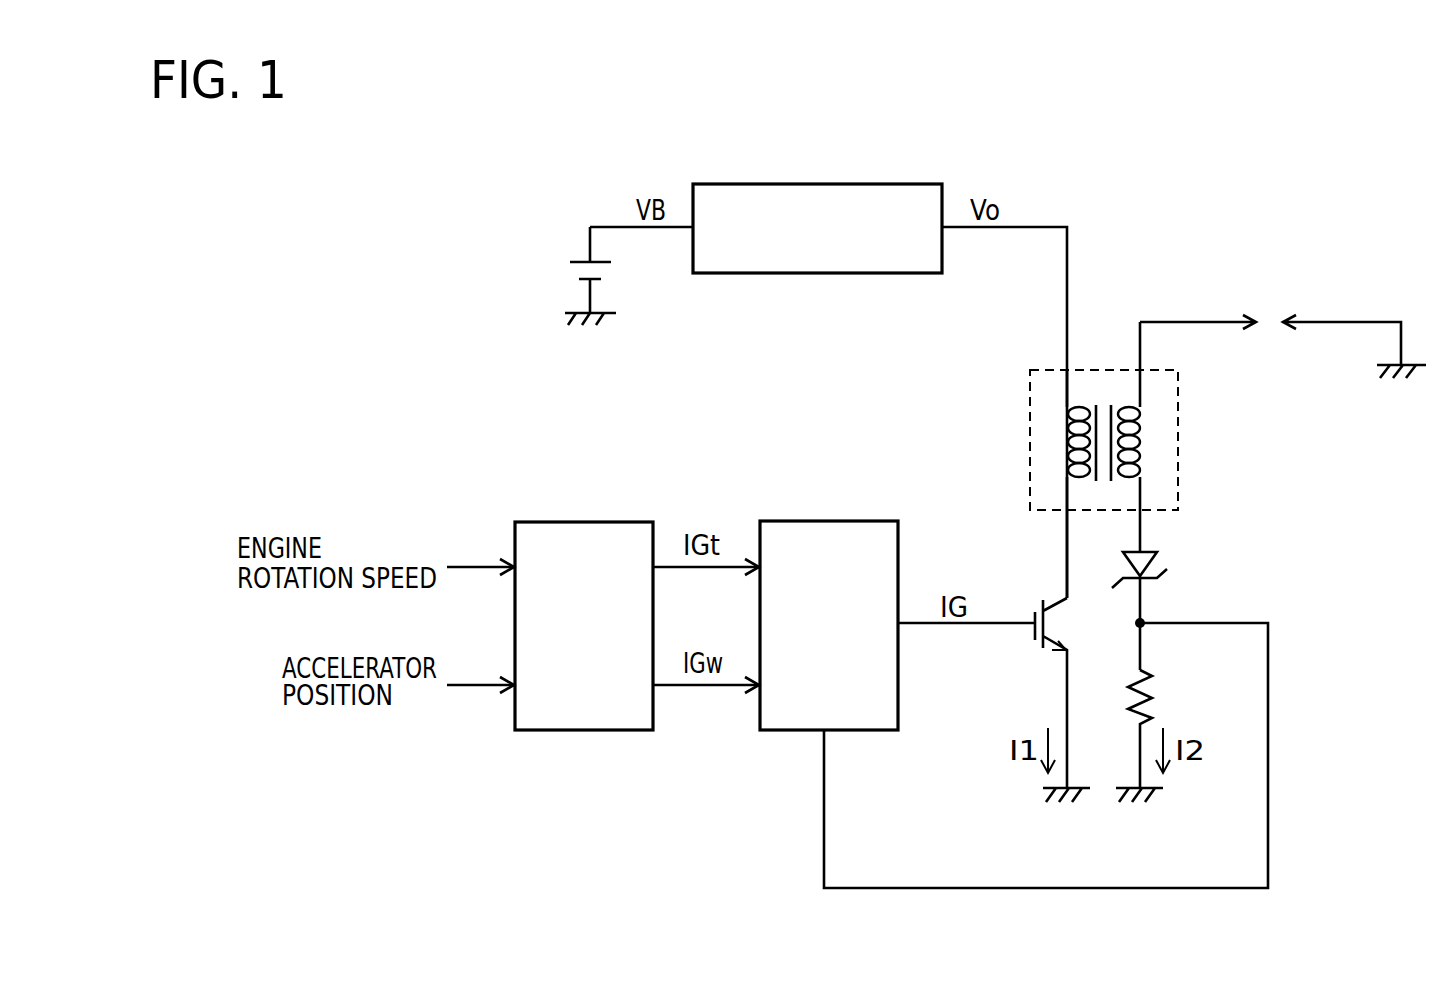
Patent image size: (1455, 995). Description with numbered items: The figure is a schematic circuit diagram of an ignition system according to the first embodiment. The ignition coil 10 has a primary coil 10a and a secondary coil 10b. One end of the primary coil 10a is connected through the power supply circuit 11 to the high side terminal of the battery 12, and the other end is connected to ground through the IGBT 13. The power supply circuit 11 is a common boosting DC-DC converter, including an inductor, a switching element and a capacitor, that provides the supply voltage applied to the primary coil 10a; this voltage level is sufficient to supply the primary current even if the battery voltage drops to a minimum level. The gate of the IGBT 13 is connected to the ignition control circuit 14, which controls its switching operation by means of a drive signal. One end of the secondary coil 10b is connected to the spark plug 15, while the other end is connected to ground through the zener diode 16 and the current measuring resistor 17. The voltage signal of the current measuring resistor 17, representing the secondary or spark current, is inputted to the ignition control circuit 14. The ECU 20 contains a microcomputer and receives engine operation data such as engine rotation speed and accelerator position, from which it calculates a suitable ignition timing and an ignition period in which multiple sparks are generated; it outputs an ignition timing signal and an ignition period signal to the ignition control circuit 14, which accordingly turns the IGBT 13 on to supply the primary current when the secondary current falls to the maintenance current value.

The ignition coil 10 is at (1104, 448).
The primary coil 10a is at (1068, 447).
The secondary coil 10b is at (1140, 449).
The power supply circuit 11 is at (722, 184).
The battery 12 is at (583, 262).
The insulated gate bipolar transistor (IGBT) 13 is at (1037, 612).
The ignition control circuit 14 is at (786, 521).
The spark plug 15 is at (1297, 300).
The zener diode 16 is at (1156, 563).
The current measuring resistor 17 is at (1143, 672).
The ECU 20 is at (556, 522).